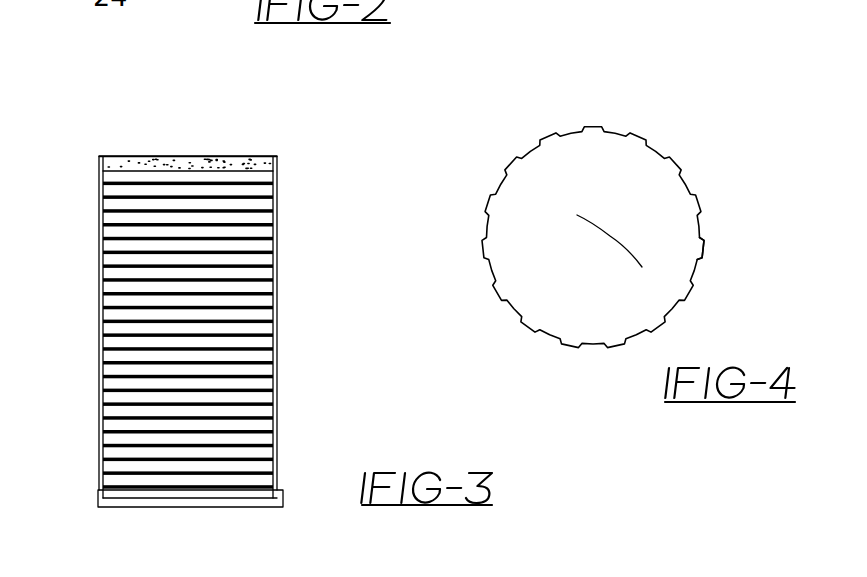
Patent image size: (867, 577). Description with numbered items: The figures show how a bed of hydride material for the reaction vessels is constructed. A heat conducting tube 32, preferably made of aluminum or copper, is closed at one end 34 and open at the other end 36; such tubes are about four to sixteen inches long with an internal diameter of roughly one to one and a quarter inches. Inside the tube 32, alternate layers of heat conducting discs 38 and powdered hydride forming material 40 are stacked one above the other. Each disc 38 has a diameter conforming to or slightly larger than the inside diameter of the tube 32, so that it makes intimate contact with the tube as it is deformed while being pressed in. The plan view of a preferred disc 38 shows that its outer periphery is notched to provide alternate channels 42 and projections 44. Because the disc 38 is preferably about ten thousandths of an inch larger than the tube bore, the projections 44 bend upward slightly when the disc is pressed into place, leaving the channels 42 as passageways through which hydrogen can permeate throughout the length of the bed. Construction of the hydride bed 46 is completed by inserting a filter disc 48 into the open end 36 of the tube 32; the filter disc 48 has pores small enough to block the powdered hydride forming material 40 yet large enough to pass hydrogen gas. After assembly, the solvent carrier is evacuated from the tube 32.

In FIG. 3, the heat conducting tube 32 is at (278, 274).
In FIG. 3, the closed end 34 is at (153, 507).
In FIG. 3, the open end 36 is at (260, 113).
In FIG. 3, the heat conducting disc 38 is at (268, 453).
In FIG. 4, the heat conducting disc 38 is at (610, 236).
In FIG. 3, the hydride forming material 40 is at (262, 400).
In FIG. 4, the channels 42 is at (642, 143).
In FIG. 4, the projections 44 is at (703, 249).
In FIG. 3, the hydride bed 46 is at (278, 357).
In FIG. 3, the filter disc 48 is at (158, 157).